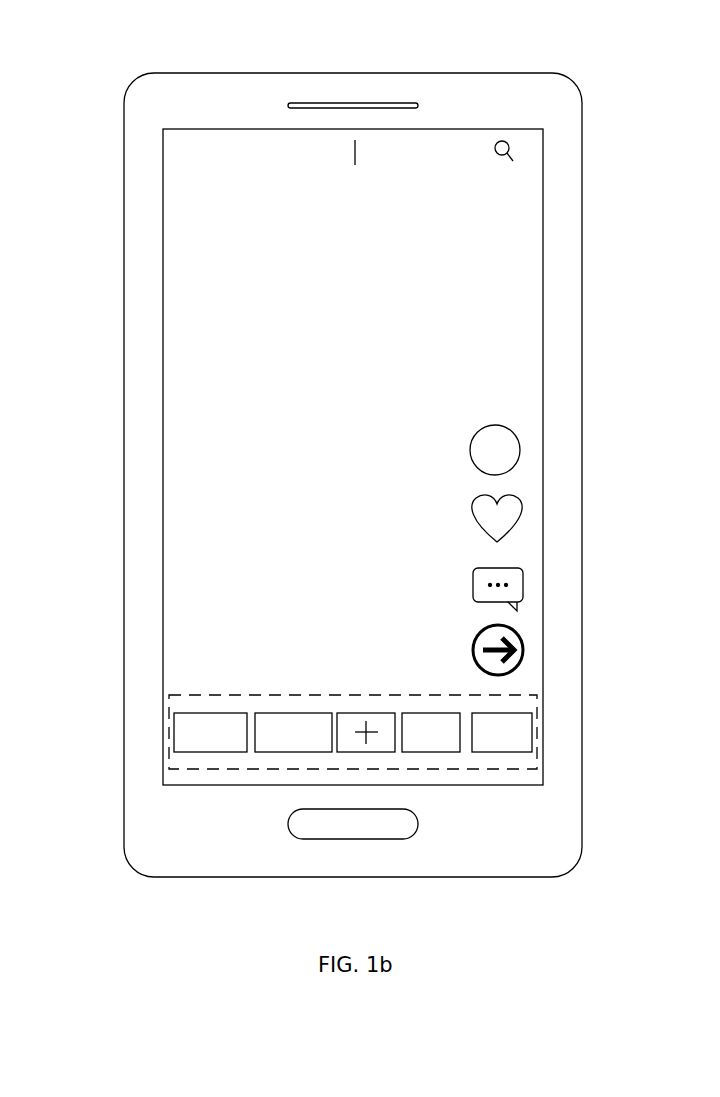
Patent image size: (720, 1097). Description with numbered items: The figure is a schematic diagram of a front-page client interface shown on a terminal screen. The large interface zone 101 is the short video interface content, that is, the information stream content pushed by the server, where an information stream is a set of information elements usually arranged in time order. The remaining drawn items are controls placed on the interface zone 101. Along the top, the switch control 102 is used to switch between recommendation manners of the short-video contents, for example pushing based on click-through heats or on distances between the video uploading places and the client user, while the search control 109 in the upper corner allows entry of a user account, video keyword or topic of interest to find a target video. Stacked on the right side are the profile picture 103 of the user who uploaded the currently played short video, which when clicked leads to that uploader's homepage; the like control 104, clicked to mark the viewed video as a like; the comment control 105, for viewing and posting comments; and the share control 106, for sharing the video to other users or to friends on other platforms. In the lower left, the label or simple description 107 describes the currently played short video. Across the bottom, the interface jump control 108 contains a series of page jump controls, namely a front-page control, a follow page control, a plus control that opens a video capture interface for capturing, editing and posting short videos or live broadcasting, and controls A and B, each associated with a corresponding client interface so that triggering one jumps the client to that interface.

The interface zone 101 is at (203, 393).
The switch control 102 is at (297, 140).
The profile picture 103 is at (520, 450).
The like control 104 is at (527, 520).
The comment control 105 is at (525, 585).
The share control 106 is at (524, 645).
The label or simple description 107 is at (172, 620).
The interface jump control 108 is at (532, 740).
The search control 109 is at (514, 150).